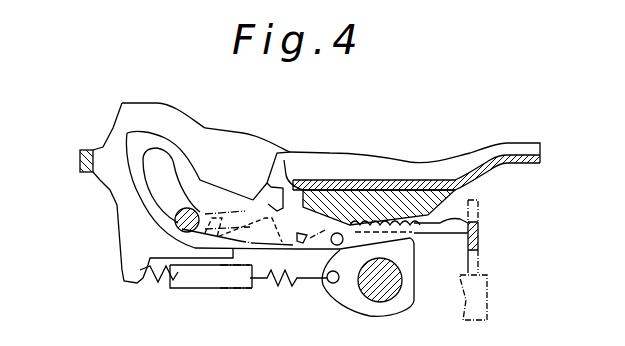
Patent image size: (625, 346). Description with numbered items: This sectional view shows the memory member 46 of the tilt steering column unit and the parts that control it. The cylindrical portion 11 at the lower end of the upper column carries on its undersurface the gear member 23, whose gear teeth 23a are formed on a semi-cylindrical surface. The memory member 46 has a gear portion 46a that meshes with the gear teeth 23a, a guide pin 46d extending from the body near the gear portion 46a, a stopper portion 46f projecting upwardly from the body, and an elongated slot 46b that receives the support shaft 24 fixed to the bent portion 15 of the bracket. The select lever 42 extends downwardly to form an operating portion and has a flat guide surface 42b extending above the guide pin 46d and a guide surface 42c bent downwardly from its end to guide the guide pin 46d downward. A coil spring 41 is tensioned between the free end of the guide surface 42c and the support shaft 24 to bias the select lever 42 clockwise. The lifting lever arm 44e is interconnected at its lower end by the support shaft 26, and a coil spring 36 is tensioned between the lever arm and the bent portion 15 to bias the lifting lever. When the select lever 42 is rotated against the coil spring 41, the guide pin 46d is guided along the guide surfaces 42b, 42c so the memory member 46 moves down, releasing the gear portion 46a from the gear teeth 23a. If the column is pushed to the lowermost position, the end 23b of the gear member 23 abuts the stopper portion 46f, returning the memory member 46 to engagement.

The cylindrical portion 11 is at (528, 143).
The bent portion 15 is at (125, 241).
The gear member 23 is at (437, 190).
The gear teeth 23a is at (412, 195).
The end of the gear member 23b is at (296, 175).
The support shaft 24 is at (152, 265).
The support shaft 26 is at (397, 293).
The coil spring 36 is at (165, 287).
The coil spring 41 is at (262, 232).
The select lever 42 is at (480, 250).
The flat guide surface 42b is at (473, 220).
The guide surface 42c is at (320, 178).
The lever arm 44e is at (343, 289).
The memory member 46 is at (172, 132).
The gear portion 46a is at (390, 200).
The elongated slot 46b is at (160, 182).
The guide pin 46d is at (340, 210).
The stopper portion 46f is at (267, 155).